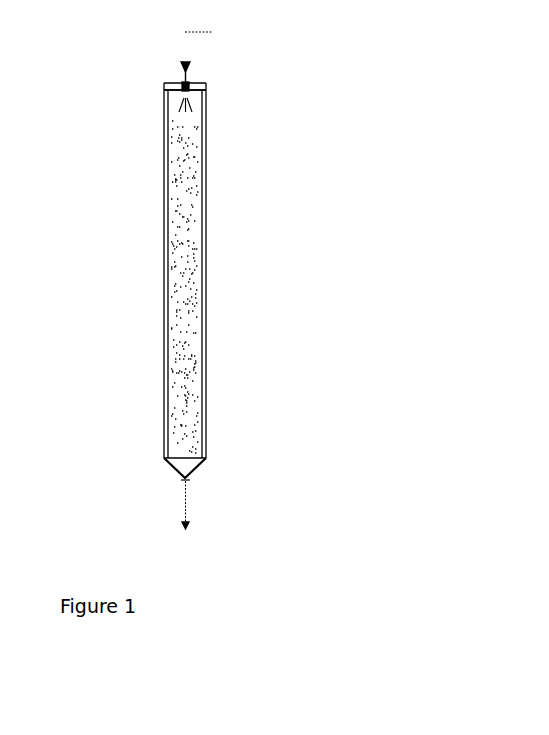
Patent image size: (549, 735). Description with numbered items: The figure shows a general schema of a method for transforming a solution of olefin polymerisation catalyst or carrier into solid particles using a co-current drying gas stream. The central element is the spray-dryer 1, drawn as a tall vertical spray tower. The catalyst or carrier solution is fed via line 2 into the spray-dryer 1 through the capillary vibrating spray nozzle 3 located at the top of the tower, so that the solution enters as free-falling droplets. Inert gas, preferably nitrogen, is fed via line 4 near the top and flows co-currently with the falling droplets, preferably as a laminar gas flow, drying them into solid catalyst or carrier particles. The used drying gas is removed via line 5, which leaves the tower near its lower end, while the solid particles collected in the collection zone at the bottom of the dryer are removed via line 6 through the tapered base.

The spray-dryer 1 is at (207, 279).
The line 2 is at (201, 19).
The capillary vibrating spray nozzle 3 is at (177, 85).
The line 4 is at (164, 87).
The line 5 is at (163, 459).
The line 6 is at (184, 518).